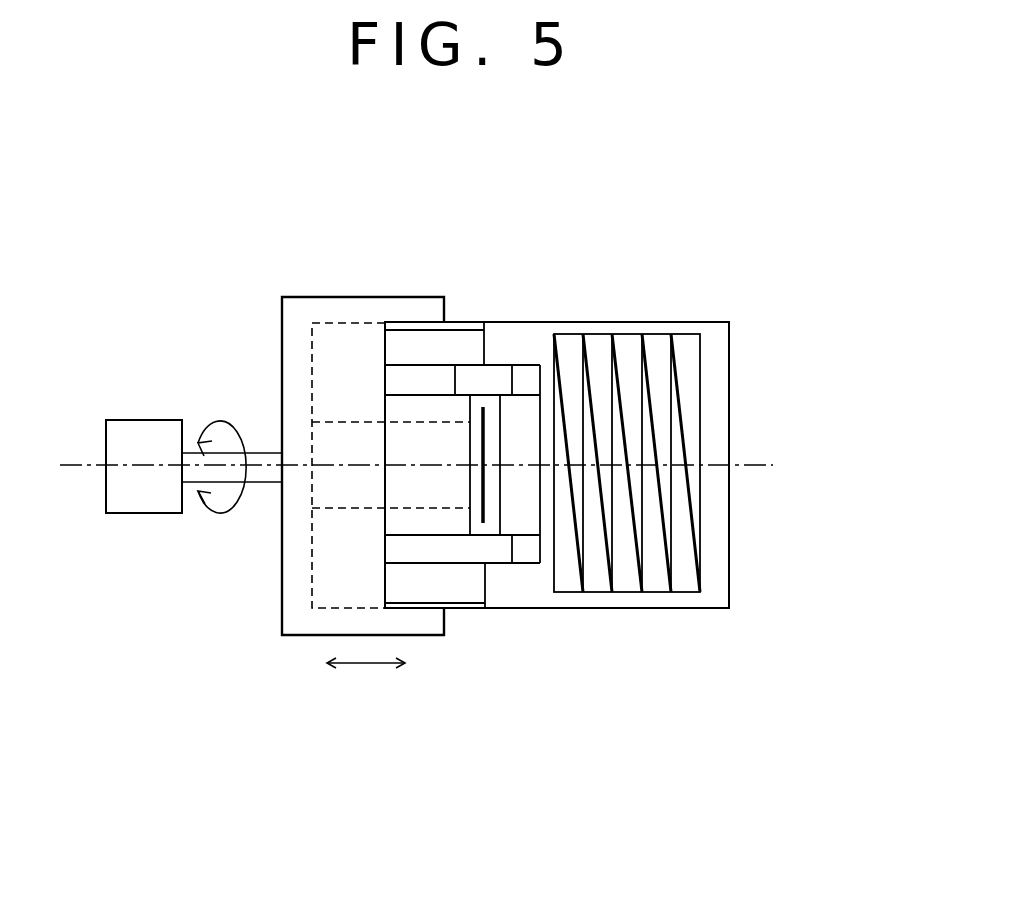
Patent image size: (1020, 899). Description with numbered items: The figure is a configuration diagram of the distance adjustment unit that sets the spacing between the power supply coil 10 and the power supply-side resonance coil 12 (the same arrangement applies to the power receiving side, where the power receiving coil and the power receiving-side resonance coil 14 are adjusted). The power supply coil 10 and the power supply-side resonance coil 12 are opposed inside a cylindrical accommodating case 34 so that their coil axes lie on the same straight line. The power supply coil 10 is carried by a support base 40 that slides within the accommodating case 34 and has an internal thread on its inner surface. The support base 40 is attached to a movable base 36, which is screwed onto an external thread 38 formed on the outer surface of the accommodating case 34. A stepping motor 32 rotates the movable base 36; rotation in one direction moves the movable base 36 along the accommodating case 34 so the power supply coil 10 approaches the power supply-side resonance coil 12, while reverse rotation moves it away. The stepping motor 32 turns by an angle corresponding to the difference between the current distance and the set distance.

The power supply coil 10 is at (581, 553).
The power supply-side resonance coil 12 is at (722, 463).
The power receiving-side resonance coil 14 is at (700, 405).
The stepping motor 32 is at (155, 420).
The accommodating case 34 is at (662, 312).
The movable base 36 is at (385, 297).
The external thread 38 is at (462, 315).
The support base 40 is at (488, 550).